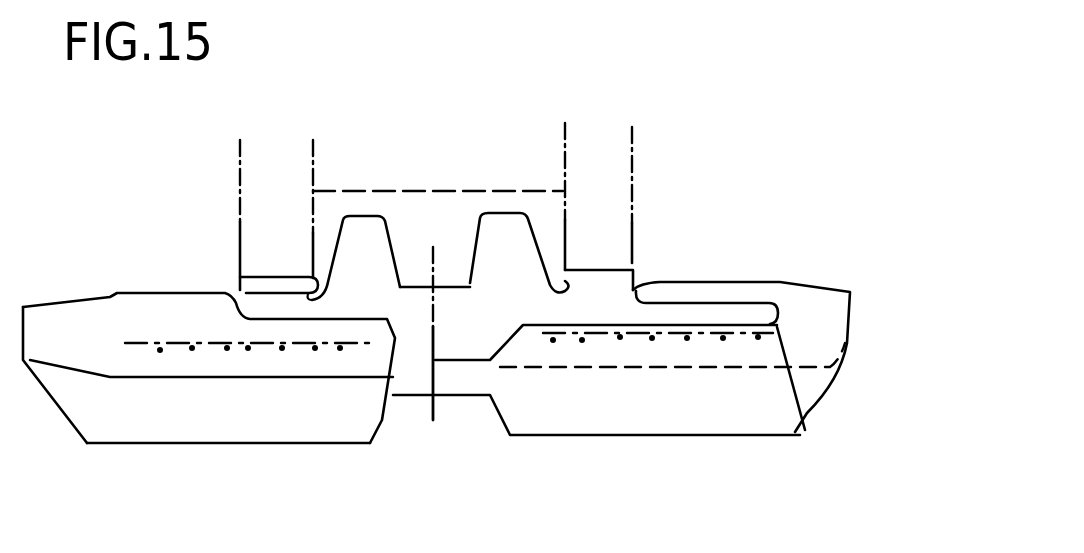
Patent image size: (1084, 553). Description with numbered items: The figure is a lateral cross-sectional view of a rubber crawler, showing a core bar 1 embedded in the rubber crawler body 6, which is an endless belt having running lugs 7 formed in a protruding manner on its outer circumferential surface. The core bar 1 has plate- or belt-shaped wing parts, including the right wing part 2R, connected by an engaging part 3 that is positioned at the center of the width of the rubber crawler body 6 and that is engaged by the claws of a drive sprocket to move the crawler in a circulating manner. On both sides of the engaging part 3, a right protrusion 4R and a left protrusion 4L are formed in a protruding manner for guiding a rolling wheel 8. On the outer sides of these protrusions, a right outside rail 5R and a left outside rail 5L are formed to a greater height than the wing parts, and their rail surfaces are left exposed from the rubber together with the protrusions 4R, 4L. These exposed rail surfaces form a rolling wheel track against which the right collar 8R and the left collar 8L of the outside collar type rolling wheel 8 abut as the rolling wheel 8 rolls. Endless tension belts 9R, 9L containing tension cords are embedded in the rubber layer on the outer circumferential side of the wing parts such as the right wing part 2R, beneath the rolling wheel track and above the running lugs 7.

The core bar 1 is at (548, 250).
The right wing part 2R is at (805, 430).
The engaging part 3 is at (445, 348).
The left protrusion 4L is at (368, 227).
The right protrusion 4R is at (507, 227).
The left outside rail 5L is at (240, 287).
The right outside rail 5R is at (644, 275).
The rubber crawler body 6 is at (820, 303).
The running lug 7 is at (288, 443).
The rolling wheel 8 is at (640, 135).
The left collar 8L is at (240, 222).
The right collar 8R is at (633, 247).
The left tension belt 9L is at (223, 350).
The right tension belt 9R is at (620, 337).